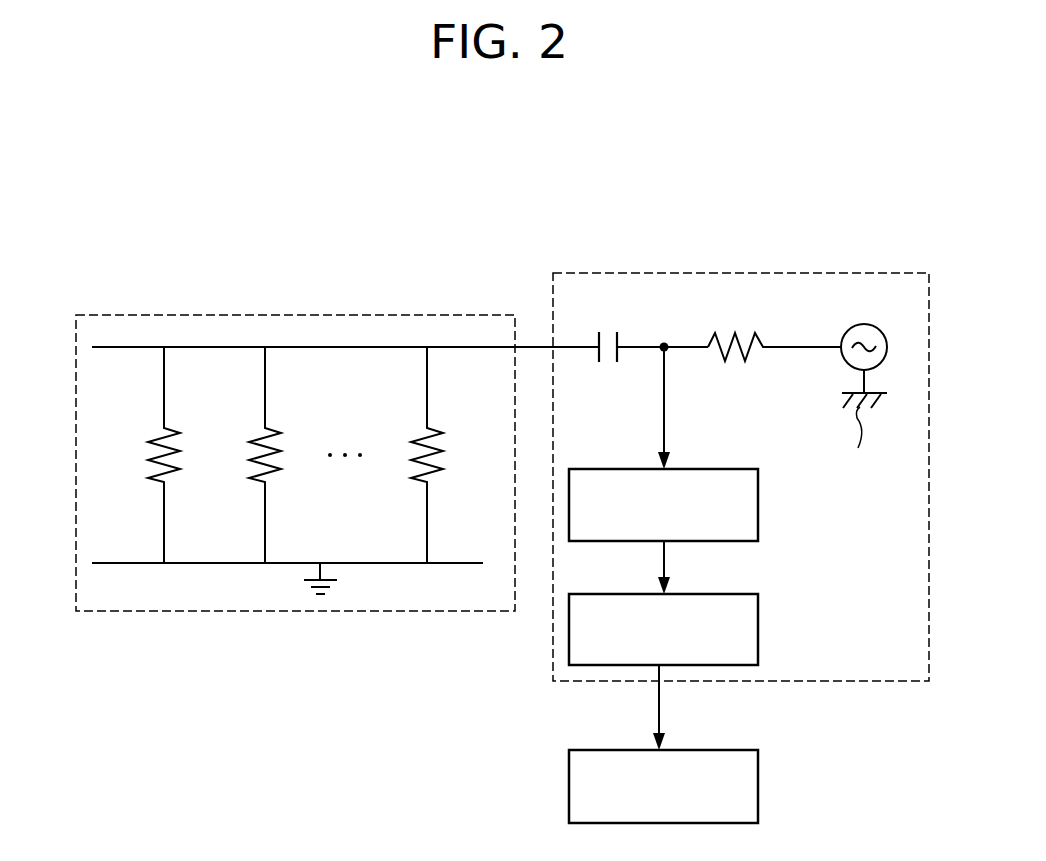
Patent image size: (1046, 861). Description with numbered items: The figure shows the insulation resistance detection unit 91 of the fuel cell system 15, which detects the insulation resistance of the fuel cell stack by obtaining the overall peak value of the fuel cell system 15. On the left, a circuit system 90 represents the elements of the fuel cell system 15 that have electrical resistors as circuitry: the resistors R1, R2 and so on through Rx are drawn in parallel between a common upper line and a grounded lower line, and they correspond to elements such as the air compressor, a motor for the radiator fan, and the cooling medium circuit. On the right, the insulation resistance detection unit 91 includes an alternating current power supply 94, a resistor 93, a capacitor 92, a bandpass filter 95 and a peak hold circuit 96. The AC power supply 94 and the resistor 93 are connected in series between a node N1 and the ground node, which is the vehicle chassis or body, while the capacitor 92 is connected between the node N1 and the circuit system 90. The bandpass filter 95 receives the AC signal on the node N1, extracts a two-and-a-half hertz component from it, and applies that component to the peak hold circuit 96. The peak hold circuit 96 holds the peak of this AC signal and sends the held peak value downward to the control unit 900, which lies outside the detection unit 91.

The fuel cell system 15 is at (368, 262).
The circuit system 90 is at (132, 312).
The insulation resistance detection unit 91 is at (838, 273).
The capacitor 92 is at (597, 342).
The resistor 93 is at (752, 336).
The alternating current power supply 94 is at (875, 324).
The bandpass filter 95 is at (719, 468).
The peak hold circuit 96 is at (719, 594).
The control unit 900 is at (716, 750).
The resistor R1 is at (148, 441).
The resistor R2 is at (252, 441).
The resistor Rx is at (416, 440).
The node N1 is at (663, 339).